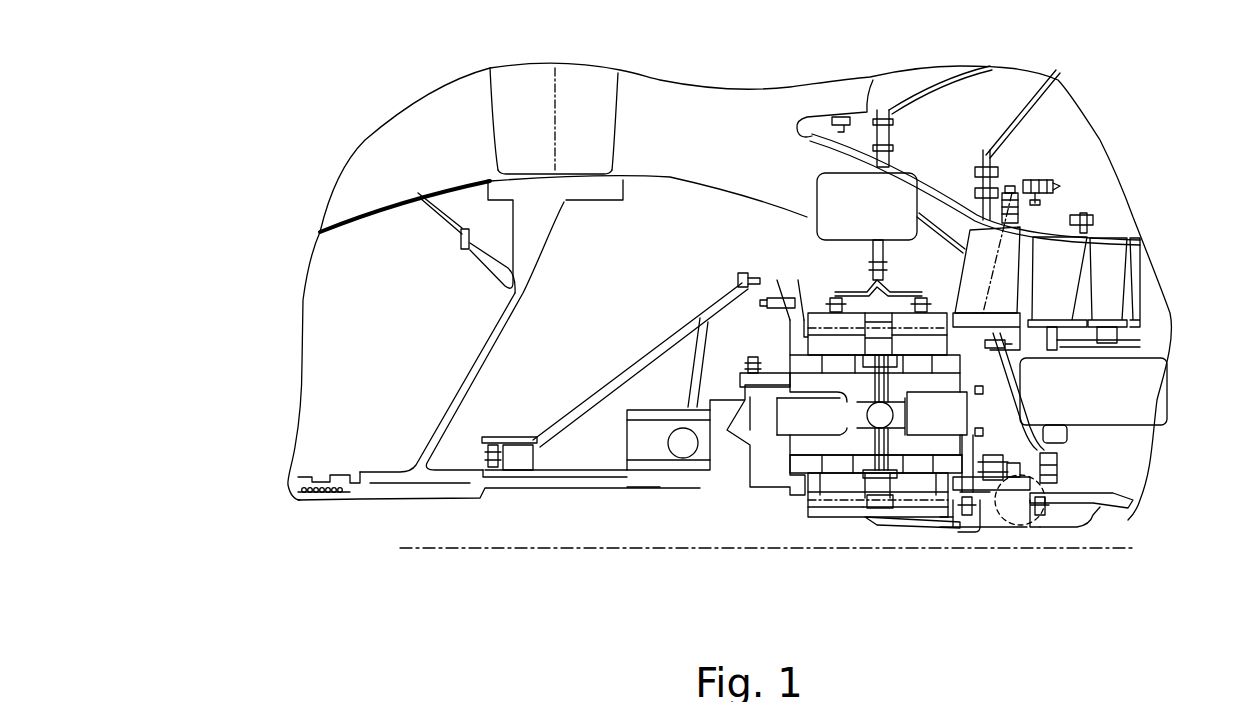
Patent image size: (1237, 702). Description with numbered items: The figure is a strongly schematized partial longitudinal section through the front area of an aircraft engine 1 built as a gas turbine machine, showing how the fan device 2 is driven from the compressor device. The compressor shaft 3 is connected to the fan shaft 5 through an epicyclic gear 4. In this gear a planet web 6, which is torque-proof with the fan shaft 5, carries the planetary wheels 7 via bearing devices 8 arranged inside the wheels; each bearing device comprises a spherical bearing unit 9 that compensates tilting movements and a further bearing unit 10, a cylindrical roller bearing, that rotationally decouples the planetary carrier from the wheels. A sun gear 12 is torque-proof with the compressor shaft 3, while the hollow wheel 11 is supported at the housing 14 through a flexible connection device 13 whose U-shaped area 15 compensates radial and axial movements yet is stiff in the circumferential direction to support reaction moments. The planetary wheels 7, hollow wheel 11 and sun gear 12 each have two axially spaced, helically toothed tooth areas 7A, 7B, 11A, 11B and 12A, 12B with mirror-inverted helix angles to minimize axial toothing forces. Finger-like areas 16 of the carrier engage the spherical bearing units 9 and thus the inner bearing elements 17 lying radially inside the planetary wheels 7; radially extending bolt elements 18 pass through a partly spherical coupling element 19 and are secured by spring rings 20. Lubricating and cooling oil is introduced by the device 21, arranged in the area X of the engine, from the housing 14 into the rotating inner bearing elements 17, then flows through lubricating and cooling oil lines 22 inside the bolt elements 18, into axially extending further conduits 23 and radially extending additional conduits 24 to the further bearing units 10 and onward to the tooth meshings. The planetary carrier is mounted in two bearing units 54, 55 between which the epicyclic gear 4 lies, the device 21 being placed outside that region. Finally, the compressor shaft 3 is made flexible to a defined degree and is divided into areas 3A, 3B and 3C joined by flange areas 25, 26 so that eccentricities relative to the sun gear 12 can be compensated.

The aircraft engine 1 is at (316, 161).
The fan device 2 is at (482, 126).
The compressor shaft 3 is at (1122, 500).
The compressor shaft area 3A is at (902, 530).
The compressor shaft area 3B is at (984, 530).
The compressor shaft area 3C is at (1087, 522).
The epicyclic gear 4 is at (749, 512).
The fan shaft 5 is at (567, 476).
The planet web 6 is at (743, 458).
The planetary wheels 7 is at (843, 522).
The tooth area of the planetary wheels 7A is at (817, 519).
The tooth area of the planetary wheels 7B is at (934, 515).
The bearing devices 8 is at (845, 497).
The spherical bearing unit 9 is at (1018, 405).
The further bearing unit 10 is at (826, 316).
The hollow wheel 11 is at (825, 292).
The tooth area of the hollow wheel 11A is at (862, 318).
The tooth area of the hollow wheel 11B is at (905, 316).
The sun gear 12 is at (905, 512).
The tooth area of the sun gear 12A is at (828, 512).
The tooth area of the sun gear 12B is at (915, 522).
The flexible connection device 13 is at (901, 288).
The housing 14 is at (1007, 383).
The U-shaped area 15 is at (883, 268).
The finger-like areas 16 is at (863, 484).
The inner bearing elements 17 is at (1030, 452).
The bolt elements 18 is at (810, 497).
The coupling element 19 is at (866, 410).
The spring rings 20 is at (836, 351).
The device 21 is at (1007, 489).
The lubricating and cooling oil lines 22 is at (875, 430).
The further conduits 23 is at (800, 366).
The additional conduits 24 is at (754, 275).
The flange area 25 is at (967, 540).
The flange area 26 is at (1040, 540).
The bearing unit 54 is at (740, 380).
The bearing unit 55 is at (1003, 494).
The area X is at (1020, 508).